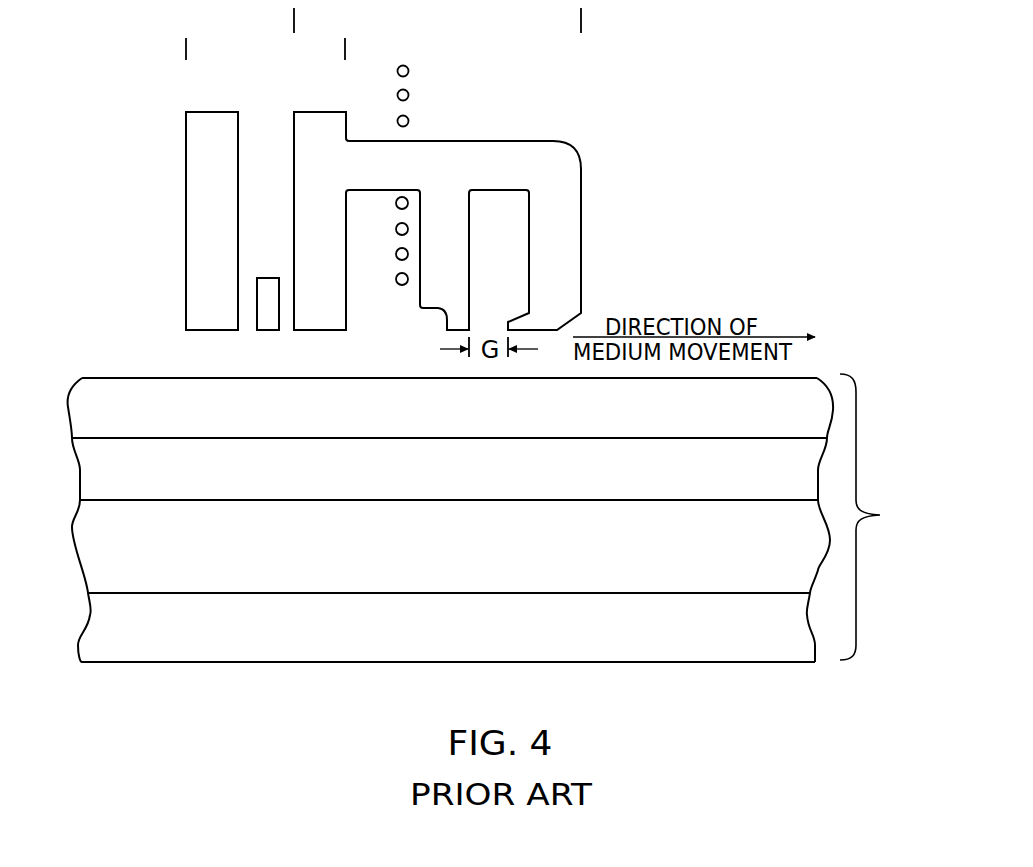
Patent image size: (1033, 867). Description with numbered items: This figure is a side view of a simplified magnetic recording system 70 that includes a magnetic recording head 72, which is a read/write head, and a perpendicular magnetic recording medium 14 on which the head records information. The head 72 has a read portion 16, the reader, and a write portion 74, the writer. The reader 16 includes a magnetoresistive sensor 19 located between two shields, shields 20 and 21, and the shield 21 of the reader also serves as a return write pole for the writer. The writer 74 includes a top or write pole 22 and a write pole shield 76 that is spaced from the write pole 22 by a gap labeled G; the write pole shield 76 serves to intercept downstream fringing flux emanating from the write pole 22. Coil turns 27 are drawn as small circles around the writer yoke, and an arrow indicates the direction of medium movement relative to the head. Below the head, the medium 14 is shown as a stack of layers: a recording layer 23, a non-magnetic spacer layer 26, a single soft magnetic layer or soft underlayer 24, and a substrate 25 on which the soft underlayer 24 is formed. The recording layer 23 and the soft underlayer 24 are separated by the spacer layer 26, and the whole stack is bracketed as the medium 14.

The perpendicular magnetic recording medium 14 is at (459, 518).
The read portion 16 is at (344, 44).
The magnetoresistive sensor 19 is at (268, 278).
The shield 20 is at (186, 166).
The shield 21 is at (318, 112).
The write pole 22 is at (470, 242).
The recording layer 23 is at (70, 407).
The soft underlayer 24 is at (83, 548).
The substrate 25 is at (783, 620).
The spacer layer 26 is at (85, 465).
The coil 27 is at (426, 95).
The magnetic recording system 70 is at (637, 165).
The magnetic recording head 72 is at (139, 128).
The write portion 74 is at (580, 14).
The write pole shield 76 is at (582, 243).